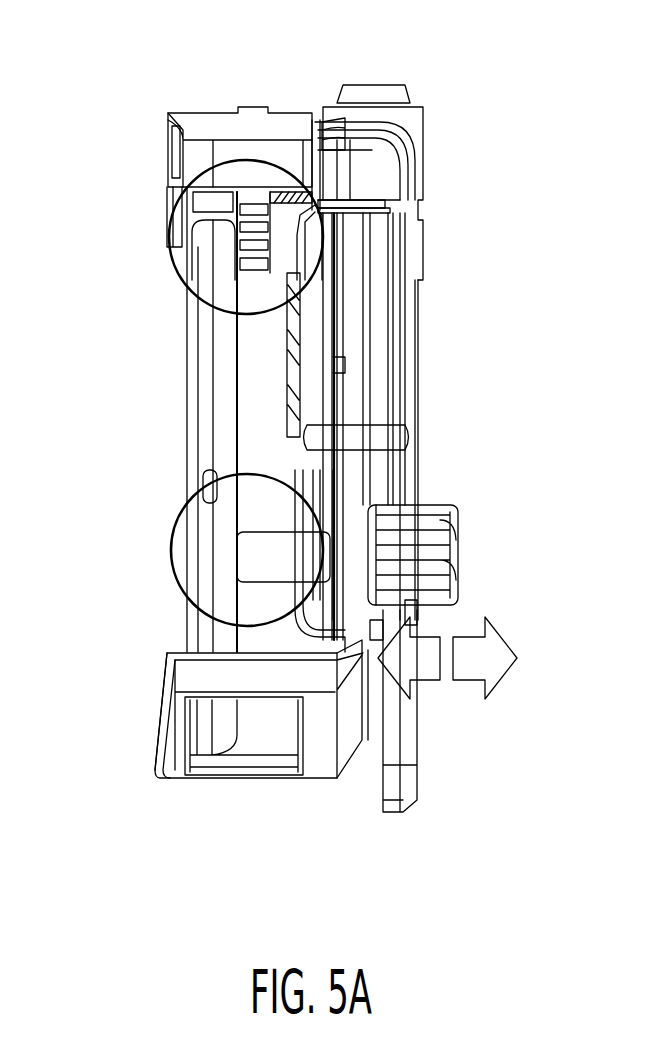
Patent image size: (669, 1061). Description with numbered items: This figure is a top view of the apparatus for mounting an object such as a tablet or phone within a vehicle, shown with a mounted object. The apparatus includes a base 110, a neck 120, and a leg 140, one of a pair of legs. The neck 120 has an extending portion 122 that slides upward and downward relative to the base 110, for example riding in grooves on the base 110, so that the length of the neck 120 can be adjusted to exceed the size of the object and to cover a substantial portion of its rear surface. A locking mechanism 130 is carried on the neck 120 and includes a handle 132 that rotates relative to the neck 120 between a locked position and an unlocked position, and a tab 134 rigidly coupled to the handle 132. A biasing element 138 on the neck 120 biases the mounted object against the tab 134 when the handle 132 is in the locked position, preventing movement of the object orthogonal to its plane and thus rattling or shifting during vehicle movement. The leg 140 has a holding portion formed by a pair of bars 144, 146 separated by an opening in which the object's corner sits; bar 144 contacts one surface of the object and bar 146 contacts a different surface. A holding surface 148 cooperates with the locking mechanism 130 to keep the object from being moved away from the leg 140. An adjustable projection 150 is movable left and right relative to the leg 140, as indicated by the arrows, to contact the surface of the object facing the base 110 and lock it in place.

The base 110 is at (403, 300).
The neck 120 is at (443, 176).
The extending portion 122 is at (417, 407).
The locking mechanism 130 is at (207, 97).
The handle 132 is at (300, 115).
The tab 134 is at (167, 205).
The biasing element 138 is at (250, 272).
The leg 140 is at (357, 757).
The bar 144 is at (187, 652).
The bar 146 is at (230, 778).
The holding surface 148 is at (153, 705).
The adjustable projection 150 is at (232, 553).